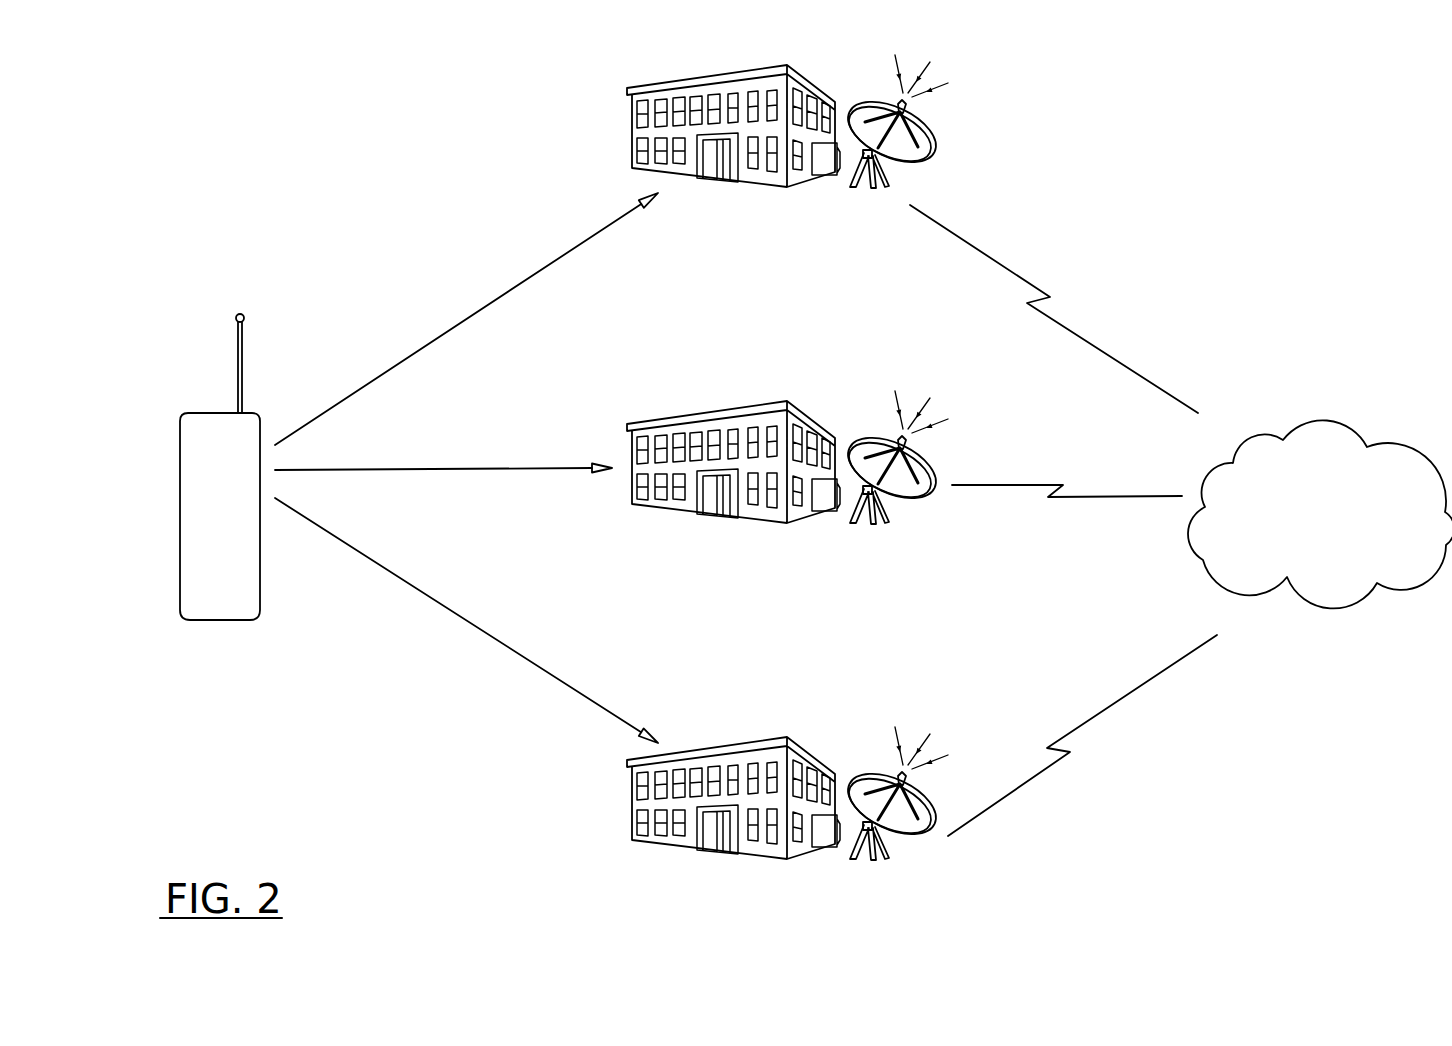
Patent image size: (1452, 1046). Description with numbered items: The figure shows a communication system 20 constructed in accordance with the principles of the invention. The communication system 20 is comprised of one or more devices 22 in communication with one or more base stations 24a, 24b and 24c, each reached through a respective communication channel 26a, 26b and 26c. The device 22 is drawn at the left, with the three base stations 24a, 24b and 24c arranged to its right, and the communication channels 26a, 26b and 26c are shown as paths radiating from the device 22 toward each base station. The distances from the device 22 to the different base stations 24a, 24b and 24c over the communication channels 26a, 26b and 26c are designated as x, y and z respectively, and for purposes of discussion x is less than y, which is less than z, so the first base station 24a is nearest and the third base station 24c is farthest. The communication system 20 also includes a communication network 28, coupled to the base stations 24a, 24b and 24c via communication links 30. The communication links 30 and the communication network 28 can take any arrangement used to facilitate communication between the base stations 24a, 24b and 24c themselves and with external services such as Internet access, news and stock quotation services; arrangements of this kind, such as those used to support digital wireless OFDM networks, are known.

The communication system 20 is at (348, 180).
The device 22 is at (207, 411).
The base station 24a is at (933, 157).
The base station 24b is at (817, 420).
The base station 24c is at (702, 890).
The communication channel 26a is at (478, 312).
The communication channel 26b is at (515, 468).
The communication channel 26c is at (495, 638).
The communication network 28 is at (1305, 422).
The communication links 30 is at (1067, 327).